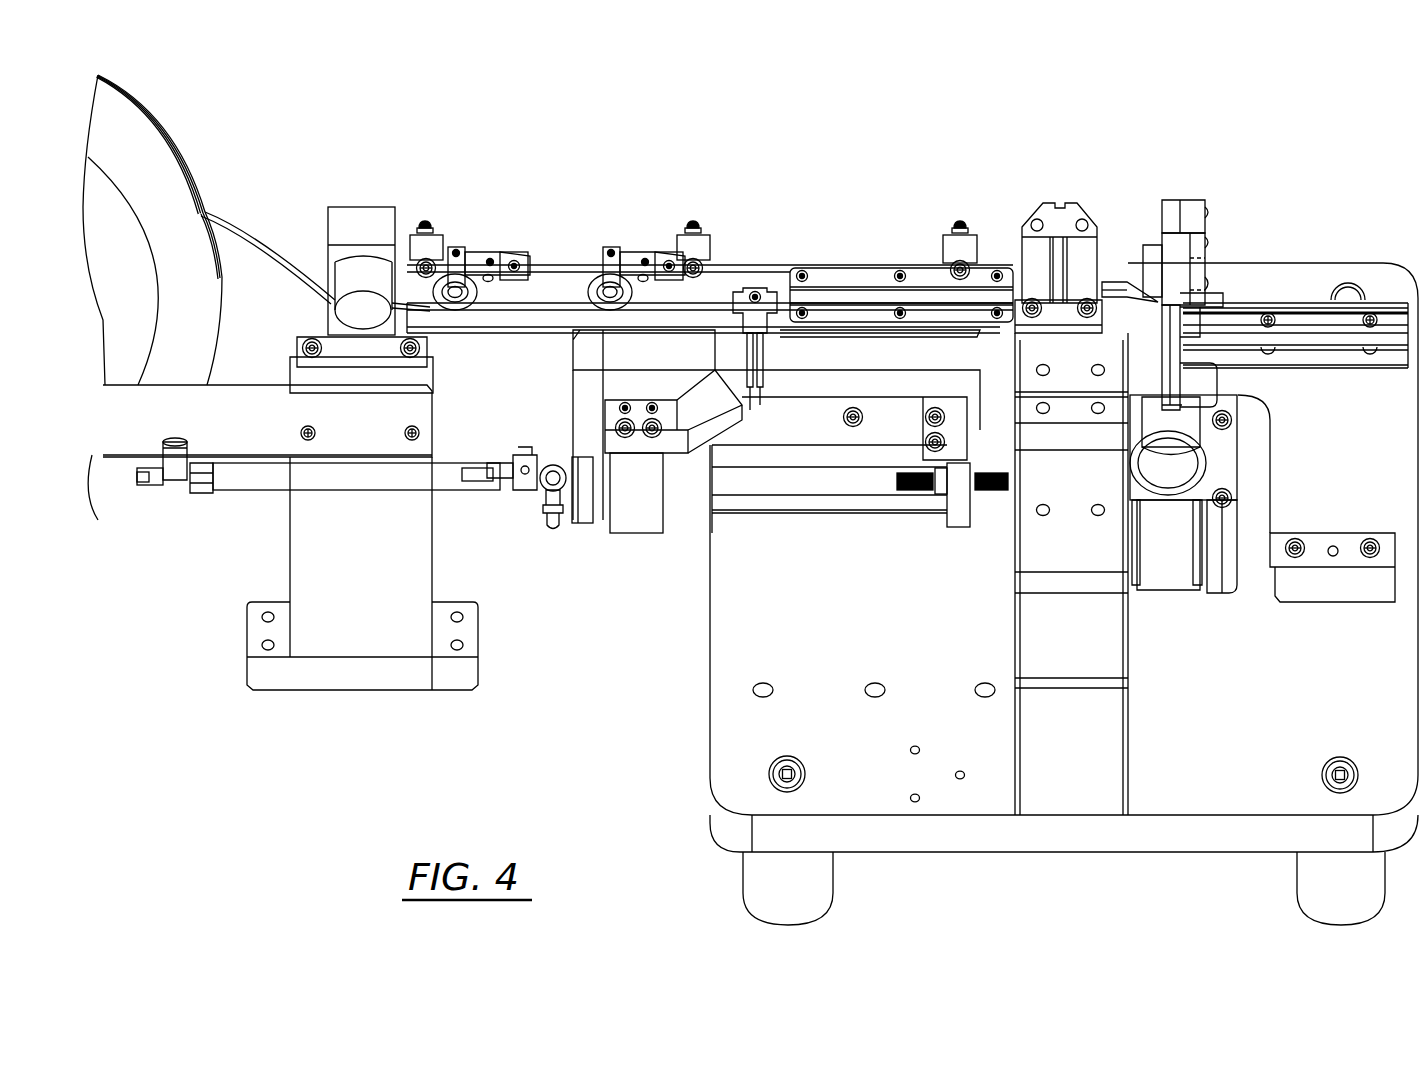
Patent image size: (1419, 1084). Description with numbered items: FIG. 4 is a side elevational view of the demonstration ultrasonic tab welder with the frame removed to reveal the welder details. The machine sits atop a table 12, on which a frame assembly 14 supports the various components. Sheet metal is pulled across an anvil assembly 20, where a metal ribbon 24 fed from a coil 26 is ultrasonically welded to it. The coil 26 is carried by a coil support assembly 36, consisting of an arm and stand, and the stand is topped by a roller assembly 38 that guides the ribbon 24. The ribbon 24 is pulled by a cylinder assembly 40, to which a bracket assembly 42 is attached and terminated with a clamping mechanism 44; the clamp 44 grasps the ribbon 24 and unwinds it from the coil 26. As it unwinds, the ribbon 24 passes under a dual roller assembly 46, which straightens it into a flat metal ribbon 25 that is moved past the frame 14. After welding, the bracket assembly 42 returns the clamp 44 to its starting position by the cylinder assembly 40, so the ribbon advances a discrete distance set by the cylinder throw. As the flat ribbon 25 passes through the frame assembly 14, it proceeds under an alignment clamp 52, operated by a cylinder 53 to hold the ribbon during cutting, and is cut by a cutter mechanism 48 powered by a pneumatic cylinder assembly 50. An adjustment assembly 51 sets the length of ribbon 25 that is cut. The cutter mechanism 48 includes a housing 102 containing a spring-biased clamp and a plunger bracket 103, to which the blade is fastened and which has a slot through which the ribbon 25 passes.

The table 12 is at (1170, 838).
The frame assembly 14 is at (1075, 763).
The anvil assembly 20 is at (1307, 323).
The metal ribbon 24 is at (247, 233).
The flat metal ribbon 25 is at (853, 307).
The coil 26 is at (150, 165).
The coil support assembly 36 is at (368, 592).
The roller assembly 38 is at (358, 272).
The cylinder assembly 40 is at (260, 480).
The bracket assembly 42 is at (637, 515).
The clamping mechanism 44 is at (753, 293).
The dual roller assembly 46 is at (613, 280).
The cutter mechanism 48 is at (1220, 274).
The cylinder assembly 50 is at (1172, 565).
The adjustment assembly 51 is at (927, 490).
The alignment clamp 52 is at (1120, 287).
The cylinder 53 is at (1052, 220).
The housing 102 is at (1200, 227).
The plunger bracket 103 is at (1170, 378).